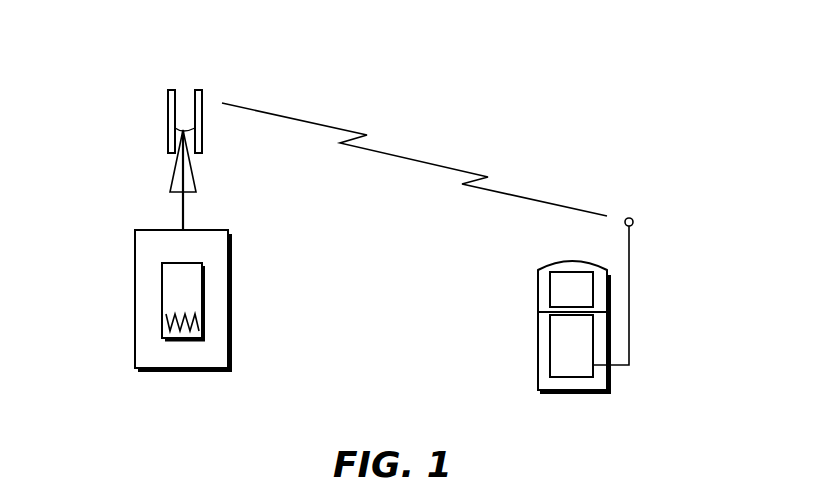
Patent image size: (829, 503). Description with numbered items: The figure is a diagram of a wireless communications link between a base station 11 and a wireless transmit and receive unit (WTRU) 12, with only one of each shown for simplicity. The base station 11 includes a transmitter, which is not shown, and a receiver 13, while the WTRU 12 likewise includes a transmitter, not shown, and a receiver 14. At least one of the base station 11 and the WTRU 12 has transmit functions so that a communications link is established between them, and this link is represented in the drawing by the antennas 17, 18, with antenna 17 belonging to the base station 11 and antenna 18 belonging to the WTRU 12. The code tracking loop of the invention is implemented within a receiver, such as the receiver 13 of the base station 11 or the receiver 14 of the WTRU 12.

The base station 11 is at (260, 241).
The wireless transmit and receive unit (WTRU) 12 is at (526, 259).
The receiver 13 is at (135, 309).
The receiver 14 is at (550, 362).
The antenna 17 is at (169, 89).
The antenna 18 is at (631, 246).